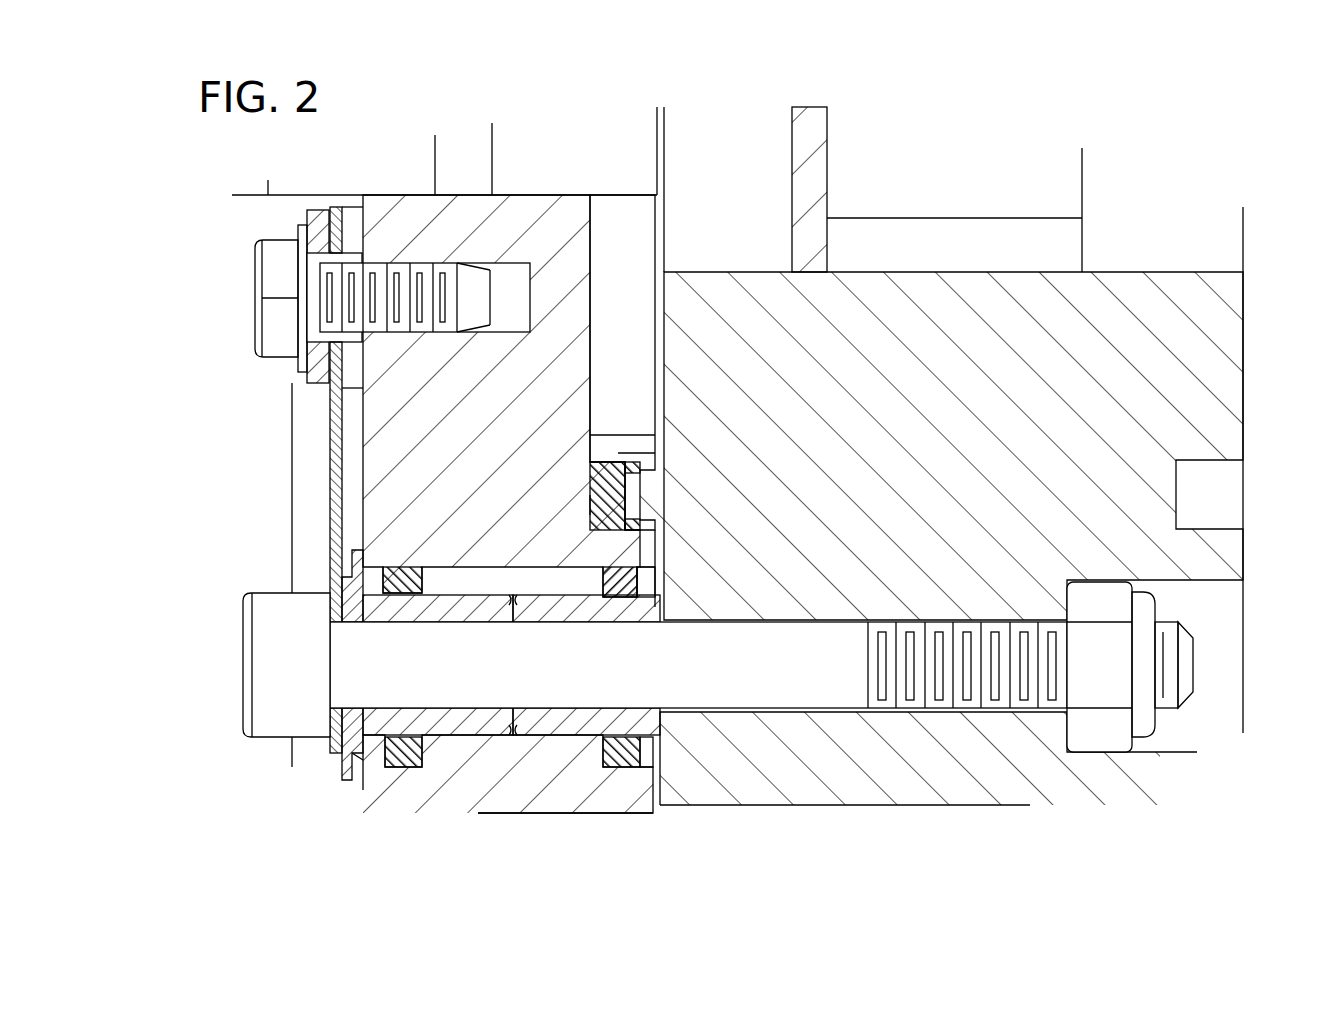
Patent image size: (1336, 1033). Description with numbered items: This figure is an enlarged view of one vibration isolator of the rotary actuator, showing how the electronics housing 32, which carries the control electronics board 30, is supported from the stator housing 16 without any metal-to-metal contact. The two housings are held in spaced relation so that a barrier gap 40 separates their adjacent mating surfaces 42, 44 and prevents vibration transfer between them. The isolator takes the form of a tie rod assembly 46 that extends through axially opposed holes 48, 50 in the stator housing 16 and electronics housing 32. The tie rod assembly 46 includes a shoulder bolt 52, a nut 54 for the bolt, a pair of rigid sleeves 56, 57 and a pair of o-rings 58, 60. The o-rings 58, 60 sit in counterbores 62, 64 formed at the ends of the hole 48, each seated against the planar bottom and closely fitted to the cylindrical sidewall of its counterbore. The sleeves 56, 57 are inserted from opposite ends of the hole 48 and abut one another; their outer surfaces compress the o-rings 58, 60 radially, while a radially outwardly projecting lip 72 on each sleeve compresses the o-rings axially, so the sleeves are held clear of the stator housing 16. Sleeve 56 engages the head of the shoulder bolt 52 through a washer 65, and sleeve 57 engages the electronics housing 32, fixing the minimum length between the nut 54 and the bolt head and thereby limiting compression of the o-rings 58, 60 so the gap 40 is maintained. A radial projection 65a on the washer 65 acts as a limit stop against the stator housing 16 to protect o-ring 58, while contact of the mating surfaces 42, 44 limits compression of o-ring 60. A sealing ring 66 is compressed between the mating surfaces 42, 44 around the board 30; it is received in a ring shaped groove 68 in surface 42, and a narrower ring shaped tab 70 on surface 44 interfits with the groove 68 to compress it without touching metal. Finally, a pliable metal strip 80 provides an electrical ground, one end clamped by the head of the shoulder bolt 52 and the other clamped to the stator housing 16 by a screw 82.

The stator housing 16 is at (530, 212).
The control electronics board 30 is at (820, 120).
The electronics housing 32 is at (1175, 285).
The barrier gap 40 is at (665, 826).
The mating surface 42 is at (656, 142).
The mating surface 44 is at (667, 142).
The tie rod assembly 46 is at (1208, 662).
The hole 48 is at (515, 735).
The hole 50 is at (985, 720).
The shoulder bolt 52 is at (288, 657).
The nut 54 is at (1107, 745).
The rigid sleeve 56 is at (478, 724).
The rigid sleeve 57 is at (560, 724).
The o-ring 58 is at (405, 768).
The o-ring 60 is at (618, 758).
The counterbore 62 is at (440, 567).
The counterbore 64 is at (627, 587).
The washer 65 is at (350, 600).
The radial projection 65a is at (370, 752).
The sealing ring 66 is at (598, 458).
The ring shaped groove 68 is at (589, 505).
The ring shaped tab 70 is at (653, 488).
The radially outwardly projecting lip 72 is at (348, 758).
The pliable metal strip 80 is at (330, 415).
The screw 82 is at (272, 265).